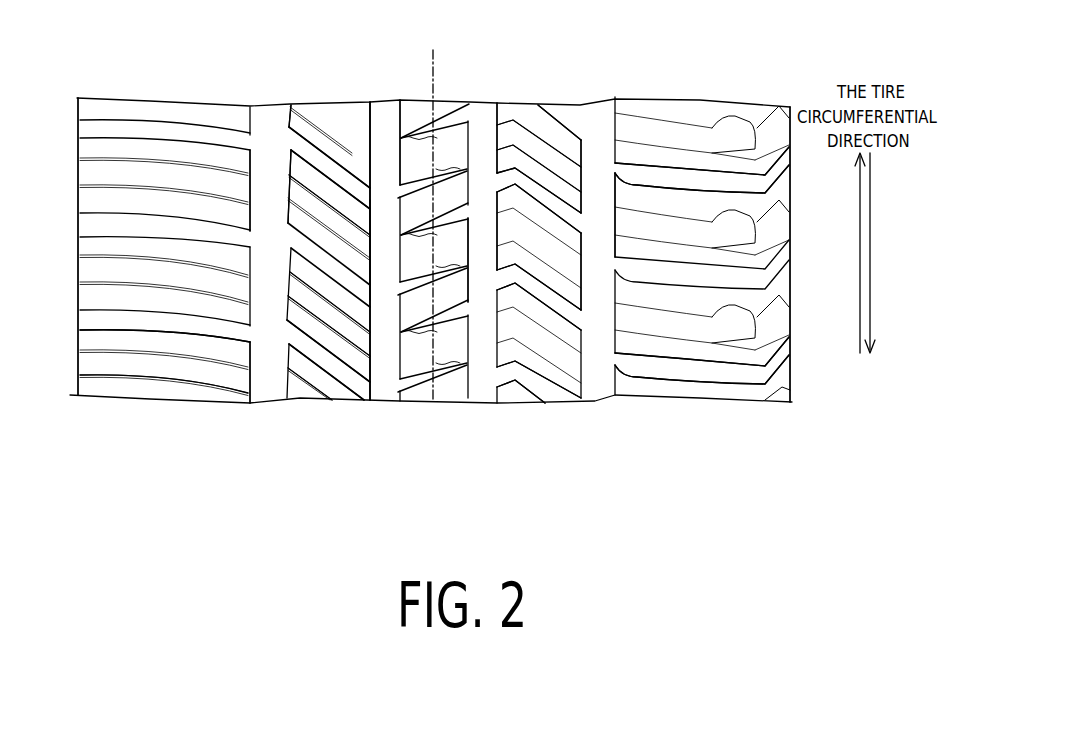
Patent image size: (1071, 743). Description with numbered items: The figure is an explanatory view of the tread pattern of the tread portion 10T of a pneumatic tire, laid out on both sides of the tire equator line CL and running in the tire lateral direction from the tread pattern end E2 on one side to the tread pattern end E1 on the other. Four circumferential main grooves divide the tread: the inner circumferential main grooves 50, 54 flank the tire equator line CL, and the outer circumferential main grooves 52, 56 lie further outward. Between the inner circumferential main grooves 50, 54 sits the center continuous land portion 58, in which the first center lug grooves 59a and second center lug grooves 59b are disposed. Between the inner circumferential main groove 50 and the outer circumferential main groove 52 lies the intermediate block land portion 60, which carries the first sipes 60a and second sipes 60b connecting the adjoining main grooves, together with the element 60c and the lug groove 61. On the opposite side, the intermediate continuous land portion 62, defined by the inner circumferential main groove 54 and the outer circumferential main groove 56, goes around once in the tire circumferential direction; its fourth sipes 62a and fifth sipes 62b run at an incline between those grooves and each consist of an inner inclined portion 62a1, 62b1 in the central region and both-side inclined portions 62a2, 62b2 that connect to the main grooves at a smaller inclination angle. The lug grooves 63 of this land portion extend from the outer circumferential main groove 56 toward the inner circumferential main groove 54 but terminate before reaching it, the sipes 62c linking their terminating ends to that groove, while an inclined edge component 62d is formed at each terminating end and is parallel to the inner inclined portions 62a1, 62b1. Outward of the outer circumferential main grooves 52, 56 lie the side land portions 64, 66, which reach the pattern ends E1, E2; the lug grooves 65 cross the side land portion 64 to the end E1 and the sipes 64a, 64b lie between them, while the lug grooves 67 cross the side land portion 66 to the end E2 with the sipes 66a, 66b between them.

The tread portion 10T is at (611, 74).
The tire equator line CL is at (431, 215).
The tread pattern end E1 is at (793, 365).
The tread pattern end E2 is at (77, 300).
The inner circumferential main groove 50 is at (488, 107).
The outer circumferential main groove 52 is at (595, 107).
The inner circumferential main groove 54 is at (387, 103).
The outer circumferential main groove 56 is at (278, 103).
The center continuous land portion 58 is at (432, 380).
The first center lug groove 59a is at (463, 307).
The second center lug groove 59b is at (445, 340).
The intermediate block land portion 60 is at (510, 385).
The first sipe 60a is at (556, 150).
The second sipe 60b is at (570, 125).
The block edge of middle land portion 60c is at (512, 125).
The lug groove 61 is at (545, 385).
The intermediate continuous land portion 62 is at (339, 370).
The fourth sipe 62a is at (307, 170).
The inner inclined portion 62a1 is at (375, 240).
The both-side inclined portion 62a2 is at (331, 200).
The fifth sipe 62b is at (340, 180).
The inner inclined portion 62b1 is at (333, 300).
The both-side inclined portion 62b2 is at (302, 300).
The sipe 62c is at (371, 110).
The edge component 62d is at (336, 380).
The lug groove 63 is at (330, 240).
The side land portion 64 is at (650, 375).
The sipe 64a is at (768, 218).
The sipe 64b is at (765, 256).
The lug groove 65 is at (737, 370).
The side land portion 66 is at (188, 387).
The sipe 66a is at (233, 392).
The sipe 66b is at (212, 362).
The lug groove 67 is at (162, 318).